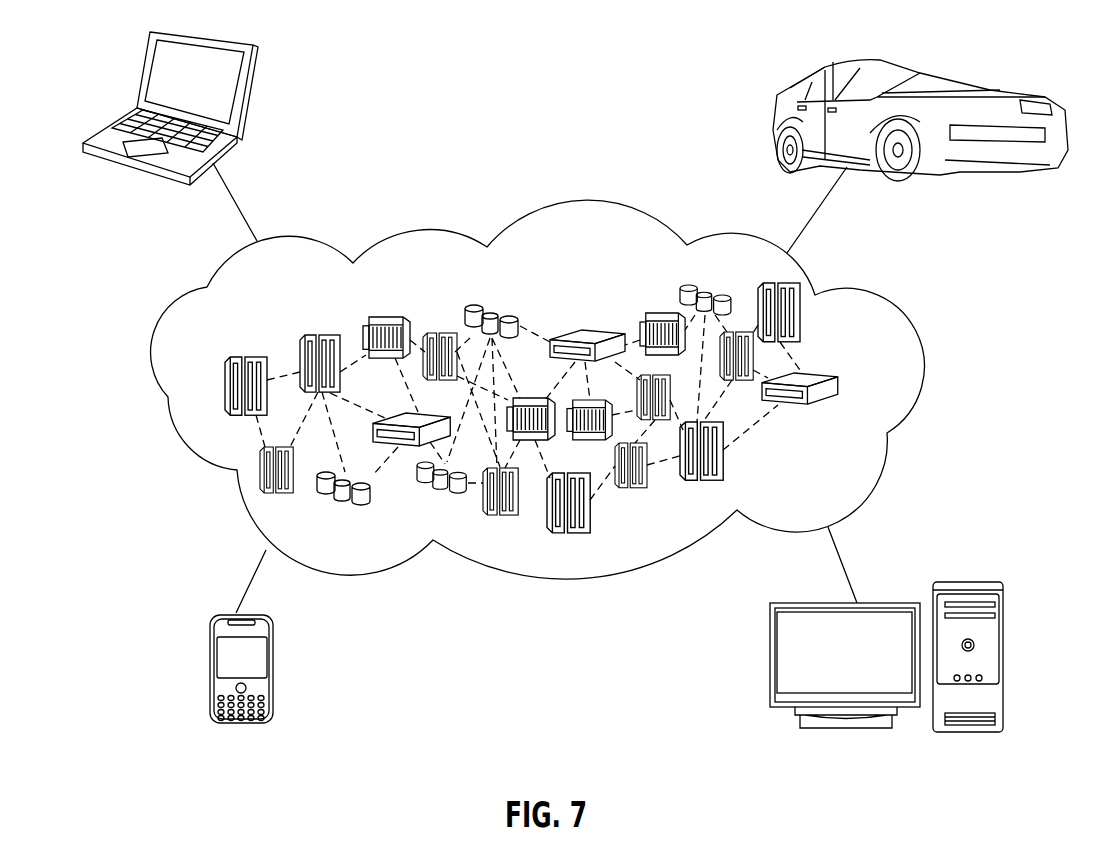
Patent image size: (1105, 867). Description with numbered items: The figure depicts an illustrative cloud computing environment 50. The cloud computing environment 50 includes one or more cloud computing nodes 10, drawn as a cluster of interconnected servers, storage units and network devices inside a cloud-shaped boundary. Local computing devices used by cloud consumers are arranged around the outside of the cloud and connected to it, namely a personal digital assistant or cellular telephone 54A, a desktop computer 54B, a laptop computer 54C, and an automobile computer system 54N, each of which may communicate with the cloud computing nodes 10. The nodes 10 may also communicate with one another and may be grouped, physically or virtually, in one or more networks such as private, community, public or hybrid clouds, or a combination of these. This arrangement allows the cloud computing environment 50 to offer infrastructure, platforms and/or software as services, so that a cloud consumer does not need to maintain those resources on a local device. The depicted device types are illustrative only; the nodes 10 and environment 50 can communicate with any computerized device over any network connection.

The cloud computing node 10 is at (873, 387).
The cloud computing environment 50 is at (898, 307).
The personal digital assistant or cellular telephone 54A is at (210, 672).
The desktop computer 54B is at (972, 580).
The laptop computer 54C is at (245, 95).
The automobile computer system 54N is at (780, 102).